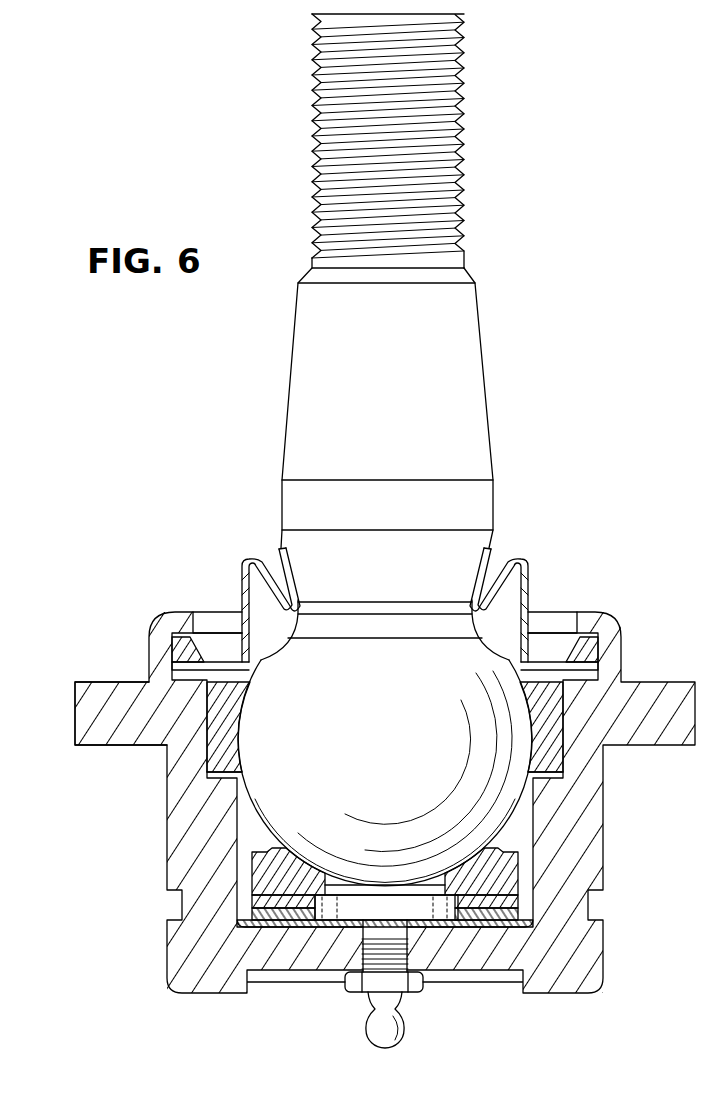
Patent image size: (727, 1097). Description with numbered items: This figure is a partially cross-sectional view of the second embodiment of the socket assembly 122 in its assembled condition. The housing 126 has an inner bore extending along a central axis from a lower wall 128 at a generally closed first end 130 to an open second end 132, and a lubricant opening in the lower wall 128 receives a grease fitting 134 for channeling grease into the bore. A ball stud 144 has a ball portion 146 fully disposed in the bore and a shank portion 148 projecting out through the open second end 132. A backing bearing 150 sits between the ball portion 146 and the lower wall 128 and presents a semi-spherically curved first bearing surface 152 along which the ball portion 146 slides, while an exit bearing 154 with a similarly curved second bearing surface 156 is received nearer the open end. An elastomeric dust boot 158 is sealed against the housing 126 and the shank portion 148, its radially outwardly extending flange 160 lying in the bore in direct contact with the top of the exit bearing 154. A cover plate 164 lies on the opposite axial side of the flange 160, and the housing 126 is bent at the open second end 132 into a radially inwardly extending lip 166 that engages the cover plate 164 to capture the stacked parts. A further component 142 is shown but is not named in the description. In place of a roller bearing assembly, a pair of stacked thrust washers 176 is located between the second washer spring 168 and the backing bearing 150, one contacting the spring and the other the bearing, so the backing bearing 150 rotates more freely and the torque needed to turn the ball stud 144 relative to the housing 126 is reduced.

The socket assembly 122 is at (592, 478).
The housing 126 is at (140, 868).
The lower wall 128 is at (487, 953).
The first end 130 is at (523, 912).
The open second end 132 is at (556, 612).
The grease fitting 134 is at (385, 1028).
The retaining ring 142 is at (600, 663).
The ball stud 144 is at (508, 385).
The ball portion 146 is at (401, 771).
The shank portion 148 is at (305, 391).
The backing bearing 150 is at (510, 872).
The first bearing surface 152 is at (284, 848).
The exit bearing 154 is at (217, 723).
The second bearing surface 156 is at (237, 763).
The dust boot 158 is at (520, 560).
The flange 160 is at (178, 681).
The cover plate 164 is at (176, 650).
The lip 166 is at (183, 616).
The second washer spring 168 is at (310, 925).
The thrust washers 176 is at (252, 913).